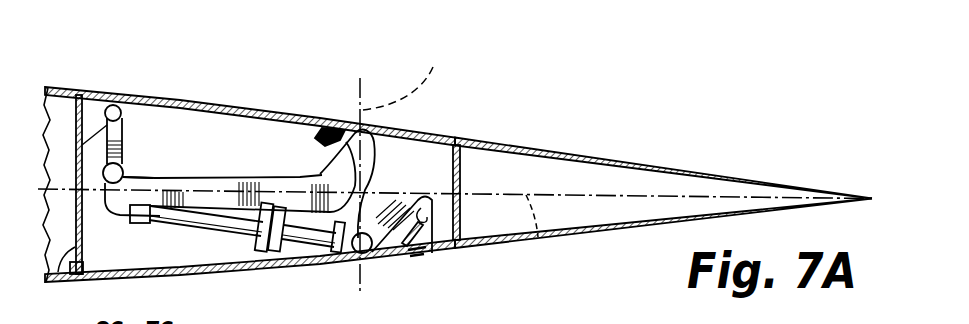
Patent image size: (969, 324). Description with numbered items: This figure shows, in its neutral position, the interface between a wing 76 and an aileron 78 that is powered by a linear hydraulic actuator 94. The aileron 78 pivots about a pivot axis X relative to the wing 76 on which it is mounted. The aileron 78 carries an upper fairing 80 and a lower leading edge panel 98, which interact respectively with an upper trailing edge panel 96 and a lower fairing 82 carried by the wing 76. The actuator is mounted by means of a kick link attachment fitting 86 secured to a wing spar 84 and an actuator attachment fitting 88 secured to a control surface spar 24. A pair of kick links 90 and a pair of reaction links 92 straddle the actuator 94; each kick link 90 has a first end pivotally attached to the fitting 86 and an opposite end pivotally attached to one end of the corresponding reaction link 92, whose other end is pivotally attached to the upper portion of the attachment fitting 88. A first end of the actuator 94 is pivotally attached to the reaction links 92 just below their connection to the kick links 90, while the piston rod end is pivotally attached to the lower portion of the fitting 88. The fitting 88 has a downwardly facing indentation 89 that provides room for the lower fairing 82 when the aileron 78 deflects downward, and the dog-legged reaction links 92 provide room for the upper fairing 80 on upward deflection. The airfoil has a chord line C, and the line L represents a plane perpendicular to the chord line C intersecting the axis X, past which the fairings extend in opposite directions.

The wing 76 is at (133, 93).
The aileron 78 is at (628, 164).
The kick link attachment fitting 86 is at (88, 97).
The wing spar 84 is at (62, 286).
The control surface spar 24 is at (460, 170).
The kick link 90 is at (122, 141).
The reaction link 92 is at (222, 178).
The upper trailing edge panel 96 is at (330, 117).
The upper fairing 80 is at (328, 118).
The hydraulic actuator 94 is at (207, 238).
The actuator attachment fitting 88 is at (418, 177).
The downwardly facing indentation 89 is at (430, 219).
The lower leading edge panel 98 is at (412, 255).
The lower fairing 82 is at (421, 250).
The line L is at (406, 76).
The pivot axis X is at (320, 240).
The chord line C is at (535, 238).